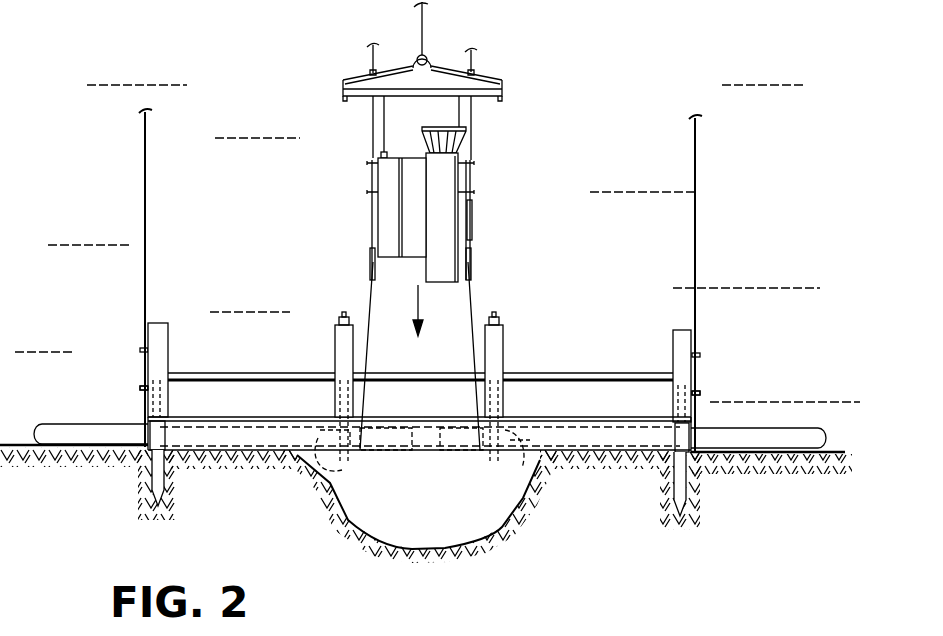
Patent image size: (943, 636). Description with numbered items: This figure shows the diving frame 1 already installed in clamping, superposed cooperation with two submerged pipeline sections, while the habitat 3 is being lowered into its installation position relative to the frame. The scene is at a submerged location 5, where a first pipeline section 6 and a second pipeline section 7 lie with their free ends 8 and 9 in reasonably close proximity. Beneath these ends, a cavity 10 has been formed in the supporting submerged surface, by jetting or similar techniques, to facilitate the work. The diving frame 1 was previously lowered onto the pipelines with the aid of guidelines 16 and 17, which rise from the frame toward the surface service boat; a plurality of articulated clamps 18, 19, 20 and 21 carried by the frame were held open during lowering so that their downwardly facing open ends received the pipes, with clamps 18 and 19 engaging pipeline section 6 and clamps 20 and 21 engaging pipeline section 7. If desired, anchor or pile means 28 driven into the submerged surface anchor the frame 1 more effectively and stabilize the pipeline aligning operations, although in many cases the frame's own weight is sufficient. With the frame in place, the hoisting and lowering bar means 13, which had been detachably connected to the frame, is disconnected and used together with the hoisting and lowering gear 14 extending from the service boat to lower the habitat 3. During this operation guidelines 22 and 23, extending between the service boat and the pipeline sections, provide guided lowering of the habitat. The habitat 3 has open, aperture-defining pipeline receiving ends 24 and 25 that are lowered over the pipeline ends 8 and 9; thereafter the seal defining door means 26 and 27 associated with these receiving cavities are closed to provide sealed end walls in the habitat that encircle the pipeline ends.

The diving frame 1 is at (254, 422).
The habitat 3 is at (445, 178).
The submerged location 5 is at (538, 480).
The first pipeline section 6 is at (335, 458).
The second pipeline section 7 is at (512, 440).
The free end 8 is at (413, 450).
The free end 9 is at (430, 447).
The cavity 10 is at (358, 510).
The hoisting and lowering bar means 13 is at (444, 82).
The hoisting and lowering gear 14 is at (422, 26).
The guideline 16 is at (146, 248).
The guideline 17 is at (697, 258).
The articulated clamp 18 is at (142, 400).
The articulated clamp 19 is at (325, 425).
The articulated clamp 20 is at (505, 432).
The articulated clamp 21 is at (705, 401).
The guideline 22 is at (476, 58).
The guideline 23 is at (370, 52).
The pipeline receiving end 24 is at (372, 222).
The pipeline receiving end 25 is at (471, 225).
The seal defining door means 26 is at (372, 265).
The seal defining door means 27 is at (473, 265).
The anchor or pile means 28 is at (148, 470).